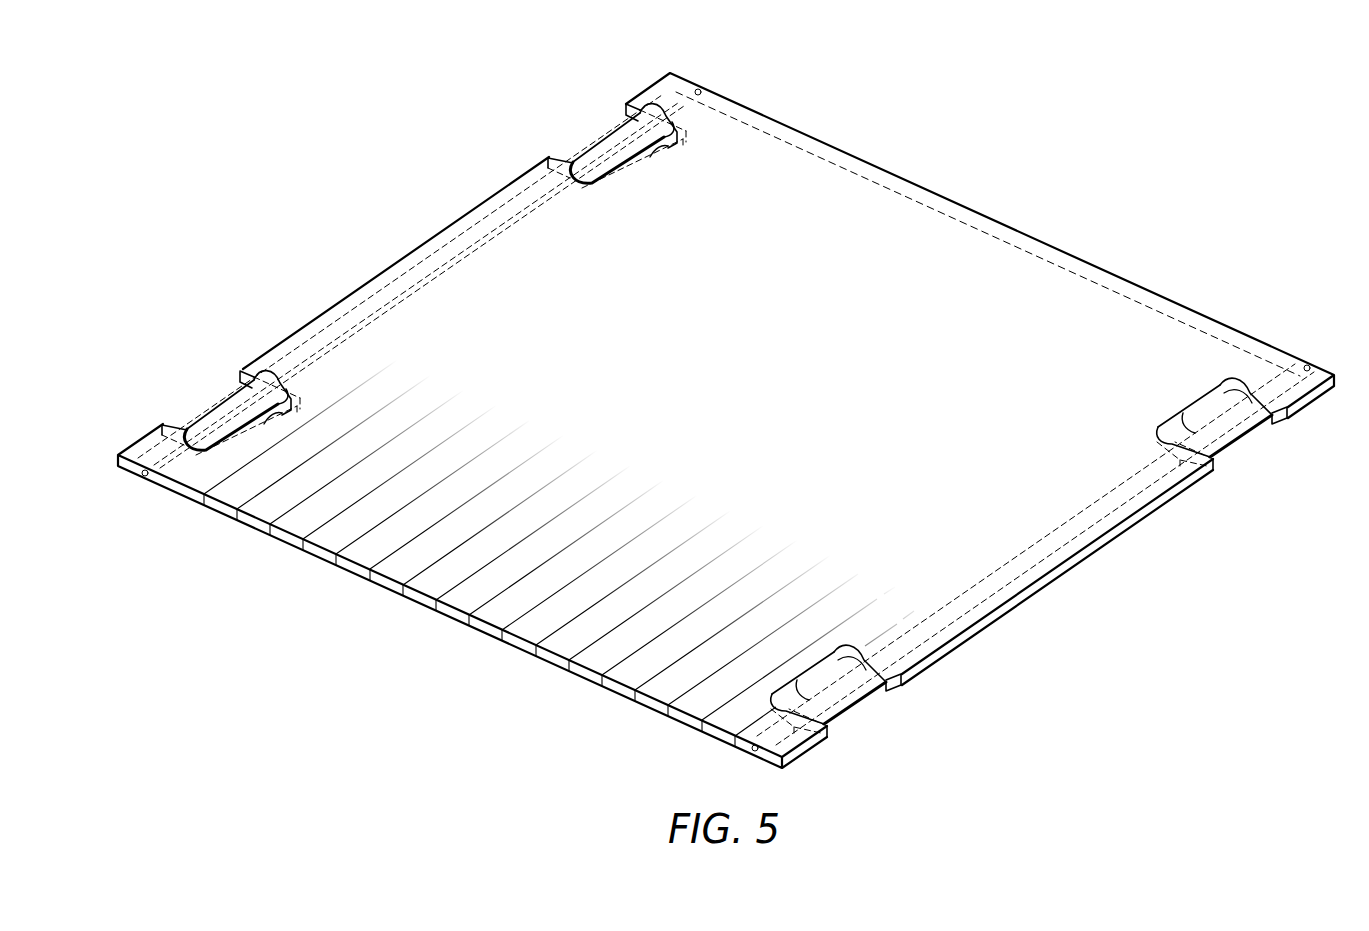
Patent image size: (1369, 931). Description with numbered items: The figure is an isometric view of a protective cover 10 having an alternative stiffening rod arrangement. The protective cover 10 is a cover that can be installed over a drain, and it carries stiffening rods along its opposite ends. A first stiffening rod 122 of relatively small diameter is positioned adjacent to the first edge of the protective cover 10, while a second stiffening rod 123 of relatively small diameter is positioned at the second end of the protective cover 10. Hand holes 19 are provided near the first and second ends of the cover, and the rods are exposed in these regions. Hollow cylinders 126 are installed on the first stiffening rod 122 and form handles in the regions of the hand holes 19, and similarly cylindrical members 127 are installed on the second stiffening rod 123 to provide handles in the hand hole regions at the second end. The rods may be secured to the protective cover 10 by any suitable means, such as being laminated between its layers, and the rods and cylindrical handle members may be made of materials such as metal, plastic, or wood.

The protective cover 10 is at (944, 242).
The hand holes 19 is at (678, 145).
The first stiffening rod 122 is at (1078, 525).
The second stiffening rod 123 is at (437, 276).
The hollow cylinders 126 is at (1242, 435).
The cylindrical members 127 is at (608, 140).